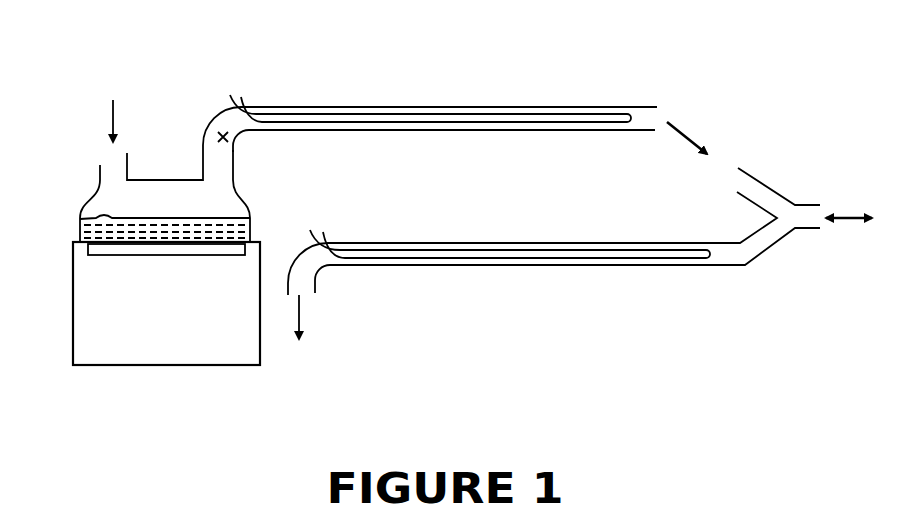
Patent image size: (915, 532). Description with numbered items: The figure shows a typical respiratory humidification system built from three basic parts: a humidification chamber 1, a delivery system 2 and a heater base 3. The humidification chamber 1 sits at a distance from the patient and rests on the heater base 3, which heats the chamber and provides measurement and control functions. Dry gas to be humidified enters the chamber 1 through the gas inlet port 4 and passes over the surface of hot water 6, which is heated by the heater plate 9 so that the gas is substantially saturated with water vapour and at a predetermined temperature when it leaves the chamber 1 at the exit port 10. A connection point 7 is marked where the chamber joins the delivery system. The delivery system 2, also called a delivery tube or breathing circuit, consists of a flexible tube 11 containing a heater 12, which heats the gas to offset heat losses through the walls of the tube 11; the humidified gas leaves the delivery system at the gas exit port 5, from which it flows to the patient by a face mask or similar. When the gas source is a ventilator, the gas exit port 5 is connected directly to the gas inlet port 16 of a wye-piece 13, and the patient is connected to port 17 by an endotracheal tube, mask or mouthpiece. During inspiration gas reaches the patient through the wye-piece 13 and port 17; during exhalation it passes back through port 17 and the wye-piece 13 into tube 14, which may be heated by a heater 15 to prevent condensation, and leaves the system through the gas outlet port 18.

The humidification chamber 1 is at (37, 153).
The delivery system 2 is at (190, 66).
The heater base 3 is at (37, 242).
The gas inlet port 4 is at (108, 167).
The gas exit port 5 is at (648, 115).
The hot water 6 is at (205, 225).
The connection point 7 is at (219, 134).
The heater plate 9 is at (236, 250).
The exit port 10 is at (220, 162).
The flexible tube 11 is at (397, 132).
The heater 12 is at (484, 124).
The wye-piece 13 is at (778, 192).
The tube 14 is at (430, 267).
The heater 15 is at (563, 260).
The gas inlet port 16 is at (738, 184).
The patient port 17 is at (825, 212).
The gas outlet port 18 is at (305, 278).